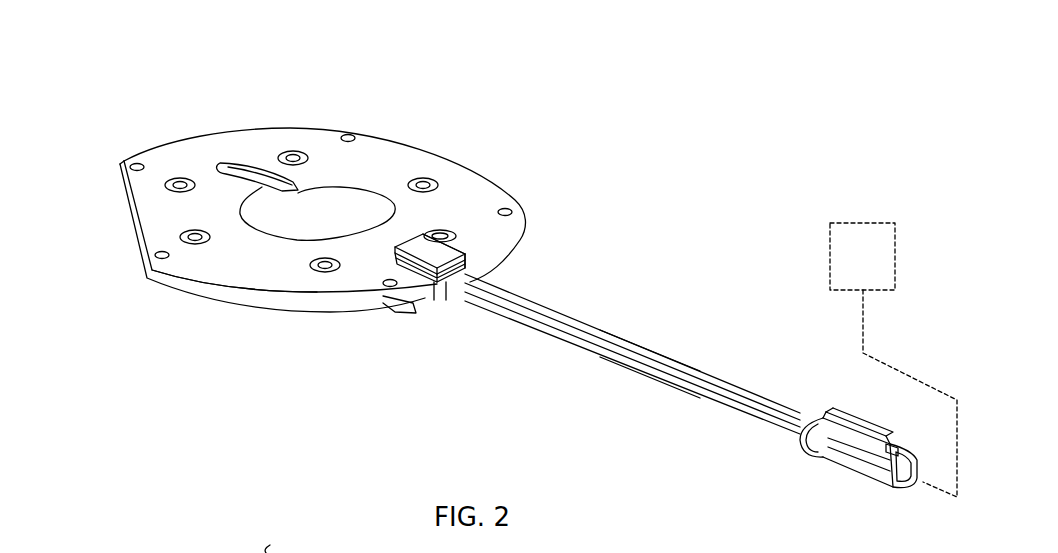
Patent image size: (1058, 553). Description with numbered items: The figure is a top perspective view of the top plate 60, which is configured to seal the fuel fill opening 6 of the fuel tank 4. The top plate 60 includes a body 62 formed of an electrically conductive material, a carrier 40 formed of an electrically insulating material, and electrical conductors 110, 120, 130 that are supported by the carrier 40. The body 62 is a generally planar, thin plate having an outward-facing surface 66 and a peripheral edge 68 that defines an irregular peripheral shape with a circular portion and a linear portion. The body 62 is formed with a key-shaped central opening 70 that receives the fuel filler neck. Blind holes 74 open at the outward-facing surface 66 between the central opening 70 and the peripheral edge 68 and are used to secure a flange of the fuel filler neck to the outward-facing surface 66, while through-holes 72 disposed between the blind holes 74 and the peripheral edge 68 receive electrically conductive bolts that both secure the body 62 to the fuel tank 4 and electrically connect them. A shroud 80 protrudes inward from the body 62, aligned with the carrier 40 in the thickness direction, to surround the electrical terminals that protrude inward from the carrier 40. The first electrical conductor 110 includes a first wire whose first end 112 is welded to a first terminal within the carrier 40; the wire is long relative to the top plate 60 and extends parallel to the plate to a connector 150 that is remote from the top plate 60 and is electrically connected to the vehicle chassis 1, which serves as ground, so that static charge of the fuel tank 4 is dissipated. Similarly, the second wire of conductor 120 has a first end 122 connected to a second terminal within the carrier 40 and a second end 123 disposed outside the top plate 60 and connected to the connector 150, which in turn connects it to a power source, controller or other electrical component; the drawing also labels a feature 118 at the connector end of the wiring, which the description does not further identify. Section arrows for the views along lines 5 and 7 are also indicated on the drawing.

The vehicle chassis 1 is at (853, 222).
The fuel tank 4 is at (420, 256).
The section line 5- 5 is at (428, 252).
The fuel fill opening 6 is at (525, 327).
The section line 7- 7 is at (562, 337).
The carrier 40 is at (440, 310).
The top plate 60 is at (326, 60).
The body 62 is at (402, 156).
The outward-facing surface 66 is at (478, 183).
The peripheral edge 68 is at (238, 294).
The central opening 70 is at (293, 231).
The through-holes 72 is at (350, 134).
The blind holes 74 is at (180, 176).
The shroud 80 is at (428, 303).
The first electrical conductor 110 is at (647, 375).
The first end of the first wire 112 is at (449, 300).
The strain relief 118 is at (805, 446).
The second electrical conductor 120 is at (634, 338).
The first end of the second wire 122 is at (482, 272).
The second end of the second wire 123 is at (805, 415).
The electrical conductor 130 is at (687, 366).
The connector 150 is at (858, 488).